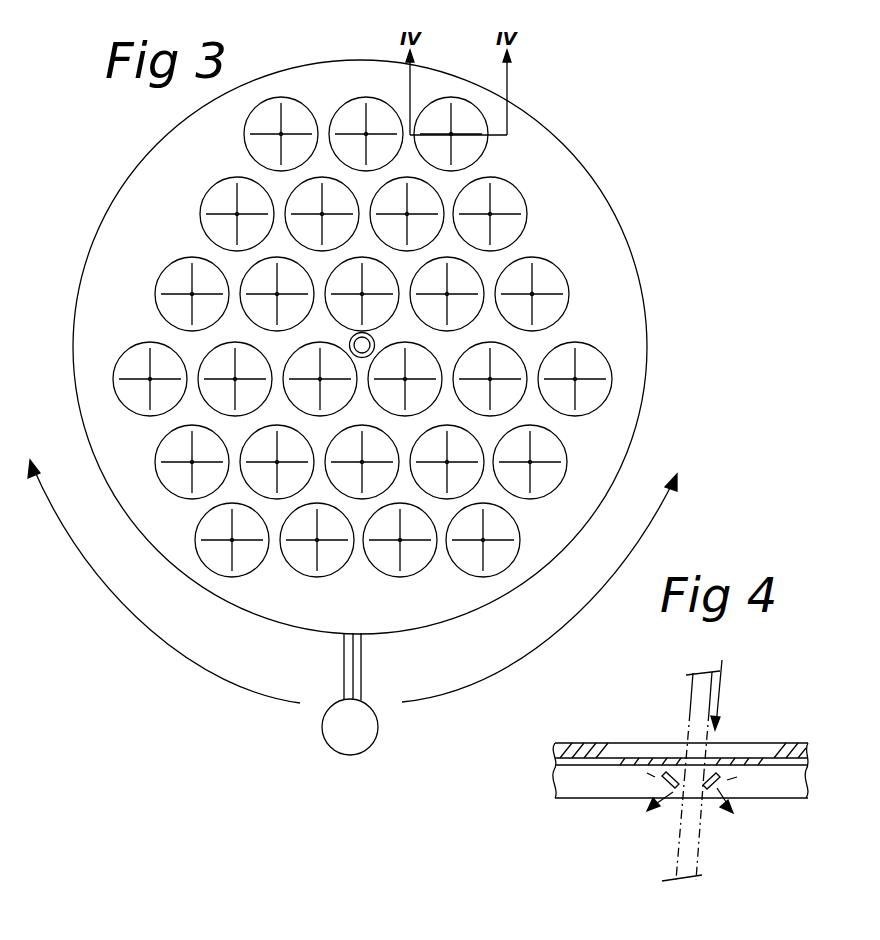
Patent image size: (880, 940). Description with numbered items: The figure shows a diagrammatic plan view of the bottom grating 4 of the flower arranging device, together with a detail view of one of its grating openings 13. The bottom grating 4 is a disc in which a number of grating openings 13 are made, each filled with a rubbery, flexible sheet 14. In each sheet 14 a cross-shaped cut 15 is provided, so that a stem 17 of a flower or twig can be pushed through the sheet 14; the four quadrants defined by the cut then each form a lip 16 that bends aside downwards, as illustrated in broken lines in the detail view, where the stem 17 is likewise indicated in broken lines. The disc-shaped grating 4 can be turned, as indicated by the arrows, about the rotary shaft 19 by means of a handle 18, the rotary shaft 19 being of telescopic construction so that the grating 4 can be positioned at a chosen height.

In FIG. 3, the bottom grating 4 is at (587, 203).
In FIG. 3, the grating openings 13 is at (550, 286).
In FIG. 3, the flexible sheet 14 is at (543, 313).
In FIG. 3, the cross-shaped cut 15 is at (558, 272).
In FIG. 4, the lip 16 is at (737, 783).
In FIG. 4, the stem 17 is at (697, 707).
In FIG. 3, the handle 18 is at (363, 723).
In FIG. 3, the rotary shaft 19 is at (362, 345).